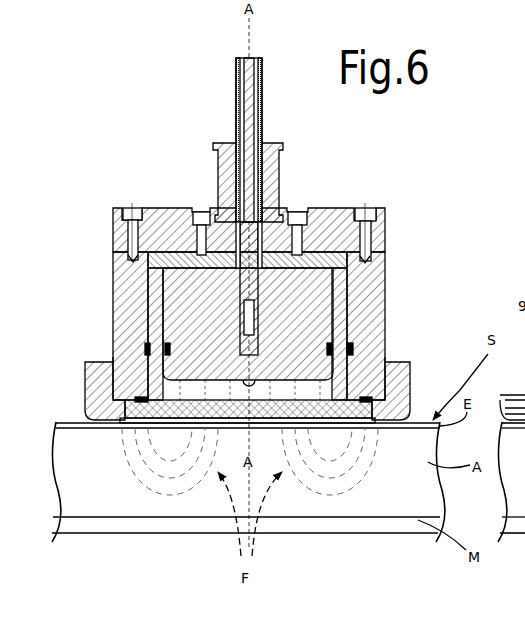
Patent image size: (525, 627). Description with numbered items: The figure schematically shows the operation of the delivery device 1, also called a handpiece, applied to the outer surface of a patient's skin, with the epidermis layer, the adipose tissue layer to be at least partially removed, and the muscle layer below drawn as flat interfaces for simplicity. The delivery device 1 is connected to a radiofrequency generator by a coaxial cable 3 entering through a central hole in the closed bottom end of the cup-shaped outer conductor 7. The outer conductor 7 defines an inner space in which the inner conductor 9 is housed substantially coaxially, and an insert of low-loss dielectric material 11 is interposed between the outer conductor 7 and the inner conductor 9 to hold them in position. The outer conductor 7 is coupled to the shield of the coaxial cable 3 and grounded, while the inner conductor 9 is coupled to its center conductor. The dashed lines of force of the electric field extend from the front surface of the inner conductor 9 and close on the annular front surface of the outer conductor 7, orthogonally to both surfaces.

The delivery device 1 is at (158, 182).
The coaxial cable 3 is at (238, 88).
The outer conductor 7 is at (370, 284).
The inner conductor 9 is at (183, 301).
The low-loss dielectric material 11 is at (360, 314).